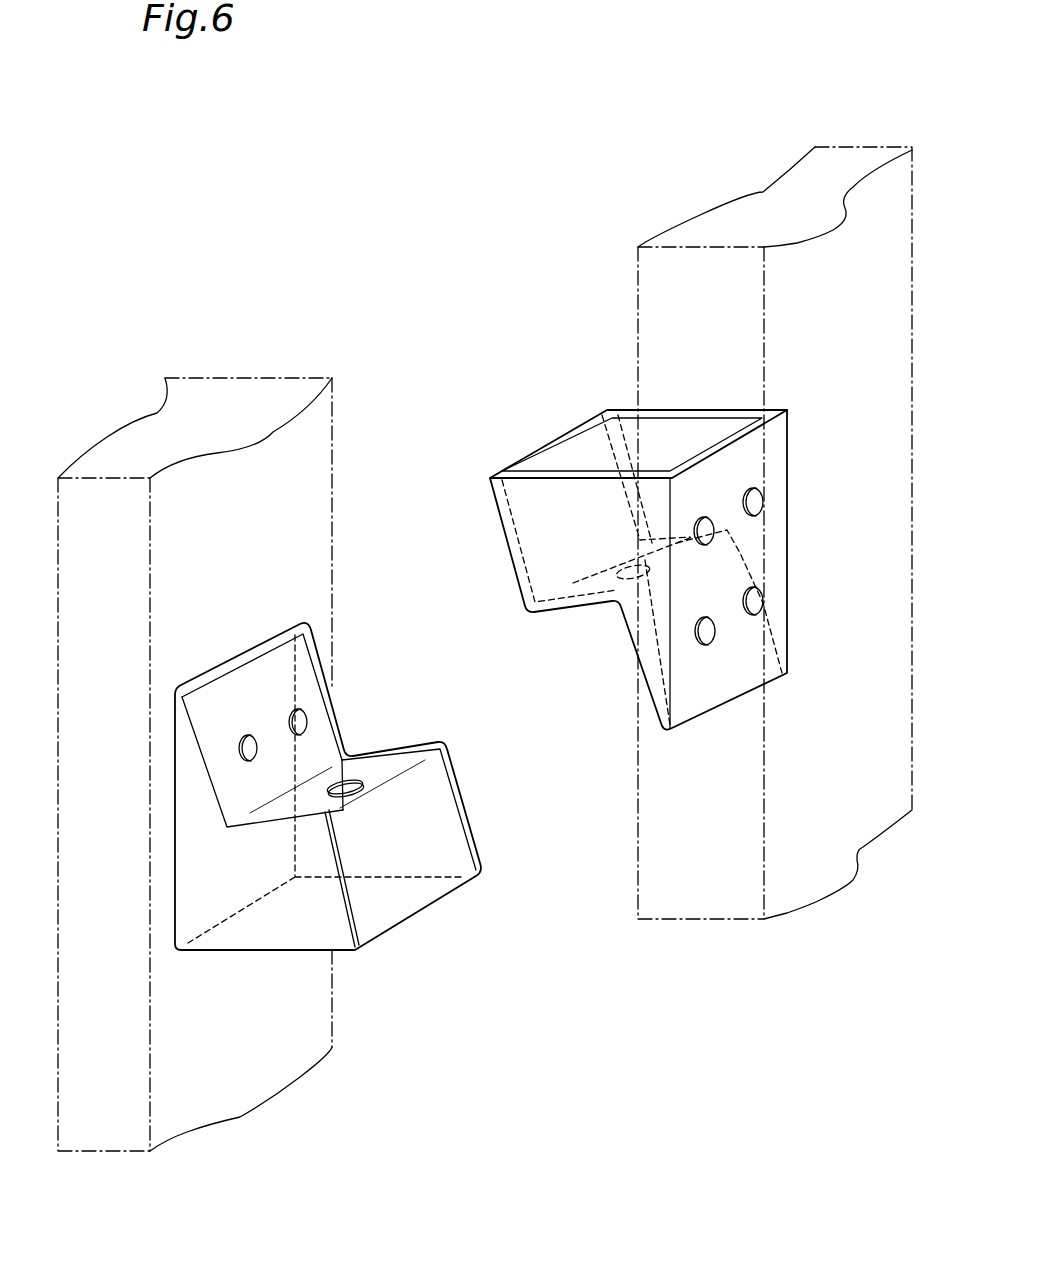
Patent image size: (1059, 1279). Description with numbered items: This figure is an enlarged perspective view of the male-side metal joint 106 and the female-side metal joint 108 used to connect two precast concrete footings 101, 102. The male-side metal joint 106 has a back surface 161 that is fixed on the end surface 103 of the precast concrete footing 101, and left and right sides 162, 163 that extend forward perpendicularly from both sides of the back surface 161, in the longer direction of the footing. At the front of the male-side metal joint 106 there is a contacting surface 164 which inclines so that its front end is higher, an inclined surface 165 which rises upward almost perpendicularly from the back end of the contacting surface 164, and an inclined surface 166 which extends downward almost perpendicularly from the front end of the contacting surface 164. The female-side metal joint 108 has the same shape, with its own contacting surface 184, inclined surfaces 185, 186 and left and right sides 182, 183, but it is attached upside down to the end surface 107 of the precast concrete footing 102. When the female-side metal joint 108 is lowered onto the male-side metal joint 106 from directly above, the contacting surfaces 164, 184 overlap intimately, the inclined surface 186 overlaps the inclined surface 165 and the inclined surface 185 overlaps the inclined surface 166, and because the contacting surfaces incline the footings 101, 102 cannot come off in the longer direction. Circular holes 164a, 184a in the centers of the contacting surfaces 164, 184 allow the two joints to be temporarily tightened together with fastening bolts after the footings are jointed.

The precast concrete footing 101 is at (229, 685).
The precast concrete footing 102 is at (715, 460).
The end surface 103 is at (258, 513).
The male-side metal joint 106 is at (276, 777).
The end surface 107 is at (665, 352).
The female-side metal joint 108 is at (656, 553).
The back surface 161 is at (207, 795).
The left side 162 is at (277, 932).
The right side 163 is at (385, 772).
The contacting surface 164 is at (356, 843).
The circular hole 164a is at (347, 785).
The inclined surface 165 is at (222, 704).
The inclined surface 166 is at (378, 918).
The left side 182 is at (730, 492).
The right side 183 is at (528, 548).
The contacting surface 184 is at (615, 570).
The circular hole 184a is at (642, 667).
The inclined surface 185 is at (622, 612).
The inclined surface 186 is at (523, 522).